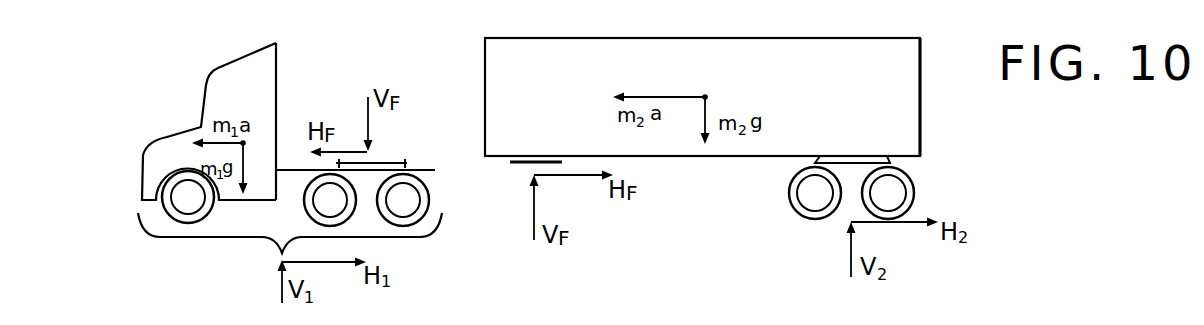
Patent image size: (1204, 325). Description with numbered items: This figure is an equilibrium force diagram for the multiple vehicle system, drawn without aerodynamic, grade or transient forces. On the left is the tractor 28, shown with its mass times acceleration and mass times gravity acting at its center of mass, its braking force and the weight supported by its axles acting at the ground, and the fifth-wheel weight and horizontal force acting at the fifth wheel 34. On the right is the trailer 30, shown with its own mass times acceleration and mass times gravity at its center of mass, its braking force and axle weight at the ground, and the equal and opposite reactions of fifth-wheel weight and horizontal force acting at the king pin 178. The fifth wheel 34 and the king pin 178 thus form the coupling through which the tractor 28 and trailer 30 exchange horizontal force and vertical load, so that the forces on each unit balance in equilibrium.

The tractor 28 is at (258, 70).
The trailer 30 is at (662, 43).
The fifth wheel 34 is at (397, 163).
The king pin 178 is at (508, 185).